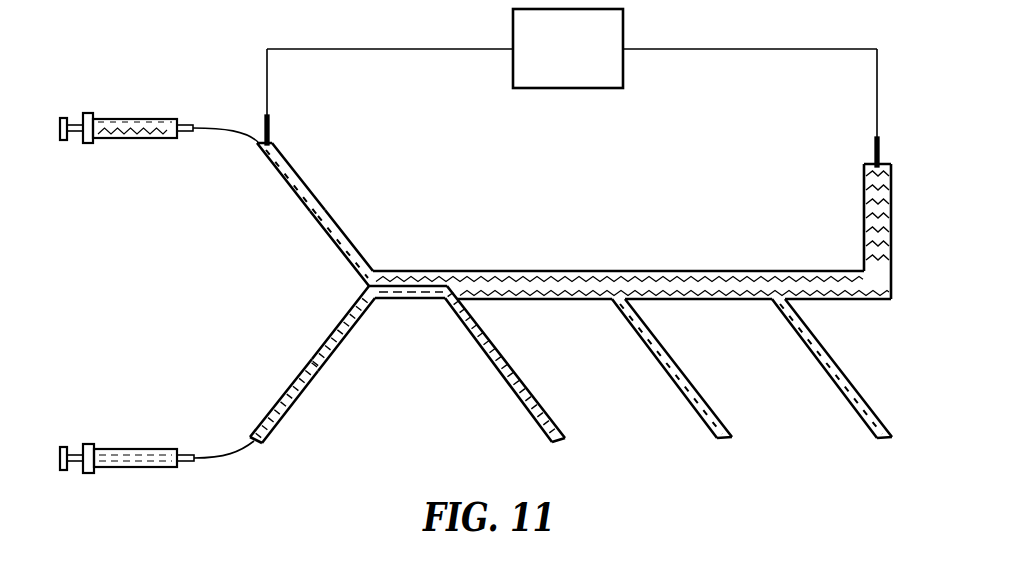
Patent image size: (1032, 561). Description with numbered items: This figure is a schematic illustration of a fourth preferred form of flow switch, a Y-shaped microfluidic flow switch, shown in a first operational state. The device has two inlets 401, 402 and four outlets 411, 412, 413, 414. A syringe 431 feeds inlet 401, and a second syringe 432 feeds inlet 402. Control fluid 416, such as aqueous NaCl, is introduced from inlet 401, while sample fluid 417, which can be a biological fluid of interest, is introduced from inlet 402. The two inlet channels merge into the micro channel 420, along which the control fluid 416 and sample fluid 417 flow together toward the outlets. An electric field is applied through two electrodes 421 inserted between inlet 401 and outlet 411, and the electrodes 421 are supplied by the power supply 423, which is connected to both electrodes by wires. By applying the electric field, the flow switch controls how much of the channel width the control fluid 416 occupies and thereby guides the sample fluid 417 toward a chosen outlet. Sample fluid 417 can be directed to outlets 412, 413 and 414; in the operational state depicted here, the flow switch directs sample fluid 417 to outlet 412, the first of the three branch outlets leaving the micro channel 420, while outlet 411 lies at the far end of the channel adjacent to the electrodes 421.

The inlet 401 is at (271, 162).
The inlet 402 is at (270, 413).
The outlet 411 is at (863, 177).
The outlet 412 is at (527, 413).
The outlet 413 is at (692, 412).
The outlet 414 is at (853, 412).
The control fluid 416 is at (355, 250).
The sample fluid 417 is at (358, 318).
The micro channel 420 is at (615, 271).
The electrodes 421 is at (270, 128).
The power supply 423 is at (618, 29).
The syringe 431 is at (135, 117).
The syringe 432 is at (135, 447).